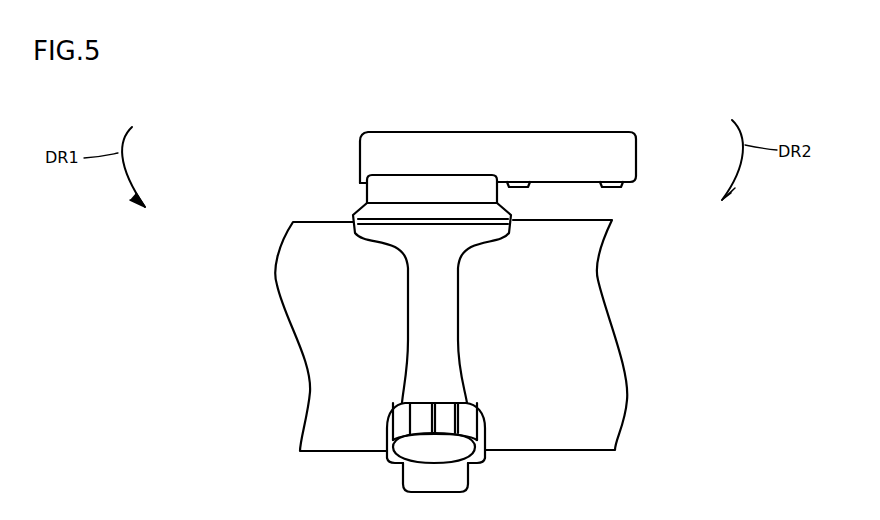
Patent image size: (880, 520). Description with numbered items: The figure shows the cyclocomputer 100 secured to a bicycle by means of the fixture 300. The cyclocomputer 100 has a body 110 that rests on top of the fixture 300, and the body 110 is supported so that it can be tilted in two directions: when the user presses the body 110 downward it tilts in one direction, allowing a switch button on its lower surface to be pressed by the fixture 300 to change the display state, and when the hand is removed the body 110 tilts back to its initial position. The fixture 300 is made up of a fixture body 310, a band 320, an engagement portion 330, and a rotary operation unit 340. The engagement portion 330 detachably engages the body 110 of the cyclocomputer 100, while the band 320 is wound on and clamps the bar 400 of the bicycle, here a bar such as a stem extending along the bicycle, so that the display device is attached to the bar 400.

The cyclocomputer 100 is at (485, 132).
The body 110 is at (595, 153).
The fixture 300 is at (214, 193).
The fixture body 310 is at (380, 223).
The band 320 is at (430, 333).
The engagement portion 330 is at (383, 192).
The rotary operation unit 340 is at (400, 425).
The bar 400 is at (580, 337).